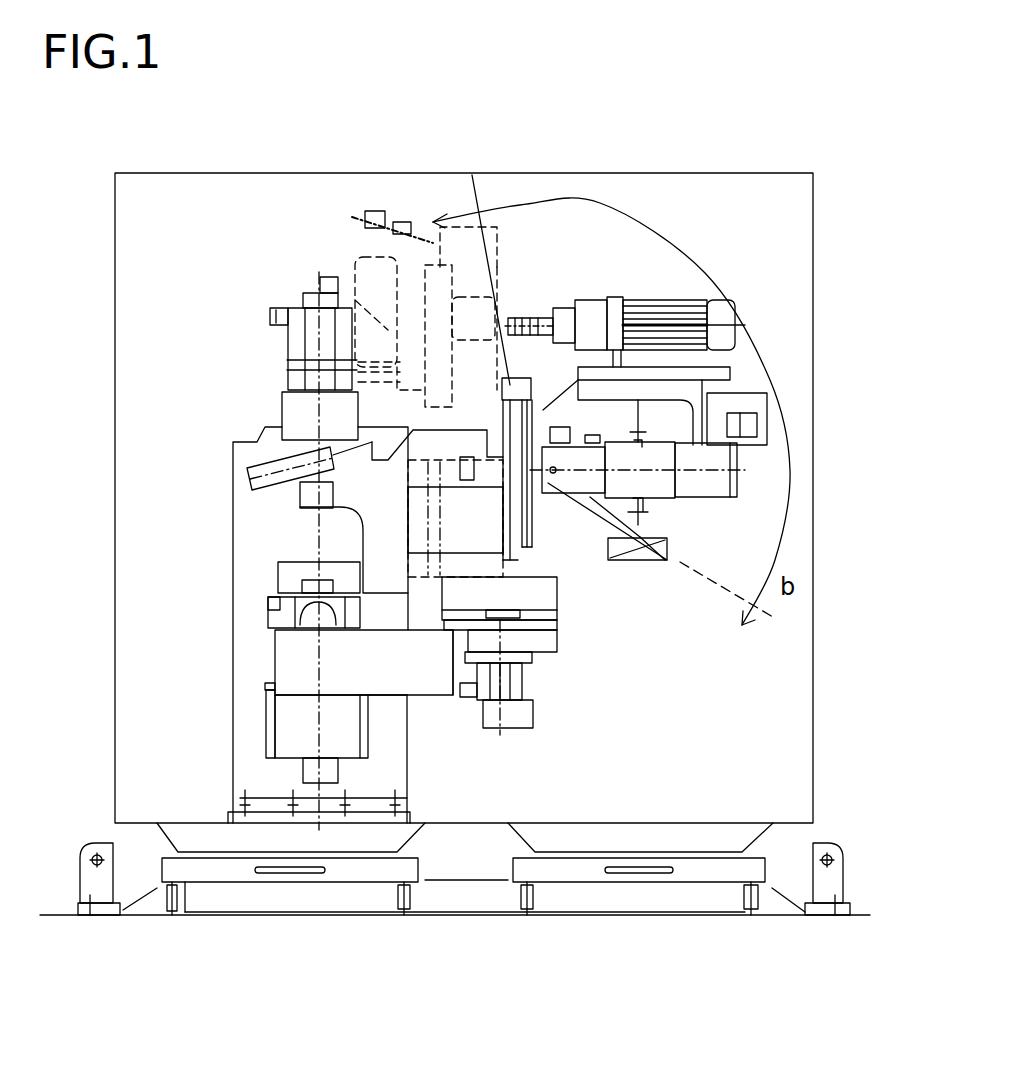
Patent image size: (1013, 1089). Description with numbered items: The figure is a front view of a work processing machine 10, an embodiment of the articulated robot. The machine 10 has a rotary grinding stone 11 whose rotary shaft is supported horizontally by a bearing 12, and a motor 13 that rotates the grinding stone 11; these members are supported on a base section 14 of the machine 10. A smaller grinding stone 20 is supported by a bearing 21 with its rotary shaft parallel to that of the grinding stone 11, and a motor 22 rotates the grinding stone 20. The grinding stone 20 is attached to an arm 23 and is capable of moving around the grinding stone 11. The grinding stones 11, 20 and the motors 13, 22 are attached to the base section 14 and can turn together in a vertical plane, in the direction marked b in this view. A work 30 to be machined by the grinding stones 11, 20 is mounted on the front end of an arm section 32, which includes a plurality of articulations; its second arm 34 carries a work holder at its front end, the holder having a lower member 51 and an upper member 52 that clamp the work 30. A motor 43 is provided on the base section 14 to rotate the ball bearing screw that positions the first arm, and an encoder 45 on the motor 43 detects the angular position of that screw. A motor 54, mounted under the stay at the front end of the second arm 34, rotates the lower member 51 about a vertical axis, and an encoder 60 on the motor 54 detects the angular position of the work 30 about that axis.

The work processing machine 10 is at (852, 128).
The rotary grinding stone 11 is at (533, 540).
The bearing 12 is at (612, 556).
The motor 13 is at (688, 505).
The base section 14 is at (233, 657).
The grinding stone 20 is at (698, 317).
The bearing 21 is at (552, 312).
The motor 22 is at (700, 303).
The arm 23 is at (710, 375).
The work 30 is at (558, 506).
The arm section 32 is at (268, 640).
The second arm 34 is at (423, 685).
The motor 43 is at (303, 718).
The encoder 45 is at (308, 770).
The lower member 51 is at (543, 613).
The upper member 52 is at (320, 412).
The motor 54 is at (545, 714).
The encoder 60 is at (465, 808).